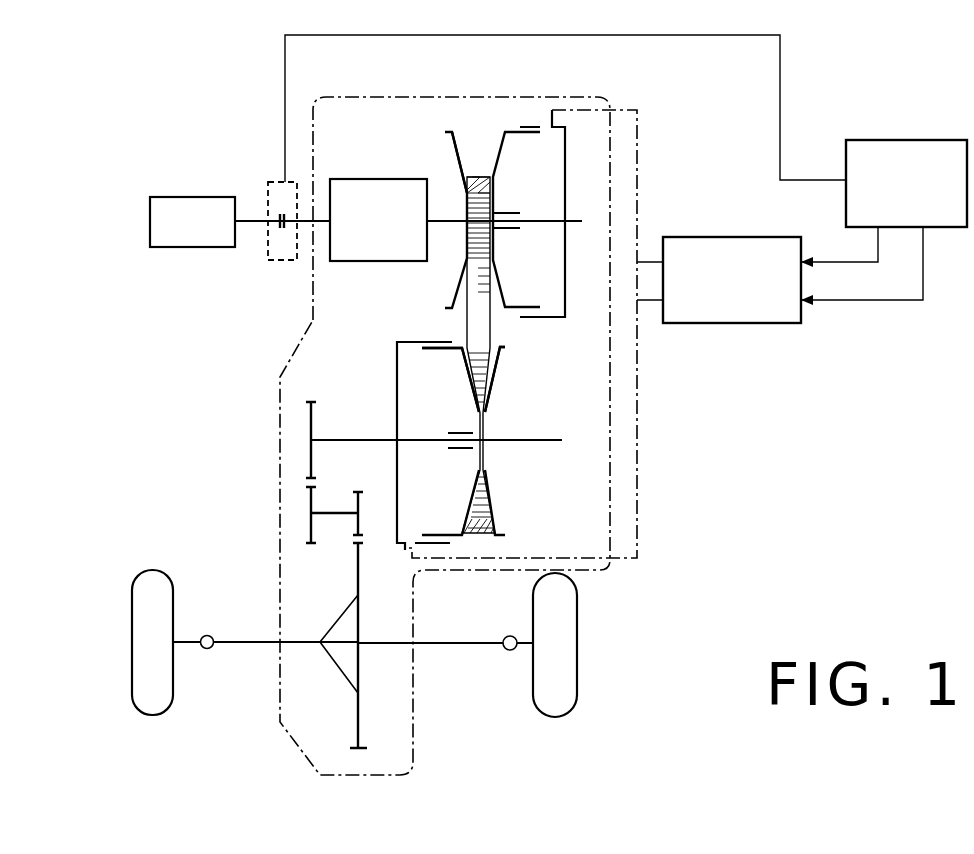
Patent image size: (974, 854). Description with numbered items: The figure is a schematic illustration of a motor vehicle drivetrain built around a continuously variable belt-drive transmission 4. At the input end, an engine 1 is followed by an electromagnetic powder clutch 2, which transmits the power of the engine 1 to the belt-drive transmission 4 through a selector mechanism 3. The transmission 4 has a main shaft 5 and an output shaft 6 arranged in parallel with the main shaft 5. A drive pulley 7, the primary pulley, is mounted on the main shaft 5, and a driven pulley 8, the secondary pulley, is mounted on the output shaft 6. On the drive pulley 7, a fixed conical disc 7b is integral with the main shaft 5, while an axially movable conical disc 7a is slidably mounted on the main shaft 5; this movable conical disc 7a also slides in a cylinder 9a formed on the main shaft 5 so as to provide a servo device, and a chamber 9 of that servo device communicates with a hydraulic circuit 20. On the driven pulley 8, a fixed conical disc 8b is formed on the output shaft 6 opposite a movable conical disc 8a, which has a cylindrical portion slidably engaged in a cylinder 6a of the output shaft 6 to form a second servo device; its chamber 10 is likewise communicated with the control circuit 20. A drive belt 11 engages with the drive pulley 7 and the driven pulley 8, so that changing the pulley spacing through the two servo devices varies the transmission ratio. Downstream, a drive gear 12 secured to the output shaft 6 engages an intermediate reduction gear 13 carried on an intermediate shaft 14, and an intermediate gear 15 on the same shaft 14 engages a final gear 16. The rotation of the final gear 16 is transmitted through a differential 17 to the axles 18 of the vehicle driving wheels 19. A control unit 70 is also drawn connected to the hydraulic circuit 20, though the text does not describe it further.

The engine 1 is at (205, 197).
The electromagnetic powder clutch 2 is at (270, 183).
The selector mechanism 3 is at (383, 179).
The continuously variable belt-drive transmission 4 is at (488, 126).
The main shaft 5 is at (443, 222).
The output shaft 6 is at (355, 439).
The cylinder of the output shaft 6a is at (420, 342).
The drive pulley 7 is at (426, 132).
The movable conical disc 7a is at (513, 130).
The fixed conical disc 7b is at (452, 154).
The driven pulley 8 is at (514, 492).
The movable conical disc 8a is at (462, 357).
The fixed conical disc 8b is at (490, 384).
The chamber 9 is at (550, 180).
The cylinder 9a is at (547, 317).
The chamber 10 is at (397, 377).
The drive belt 11 is at (480, 532).
The drive gear 12 is at (311, 400).
The intermediate reduction gear 13 is at (311, 545).
The intermediate shaft 14 is at (334, 513).
The intermediate gear 15 is at (358, 492).
The final gear 16 is at (358, 748).
The differential 17 is at (343, 626).
The axles 18 is at (200, 645).
The vehicle driving wheels 19 is at (167, 600).
The hydraulic circuit 20 is at (730, 324).
The control unit 70 is at (882, 140).